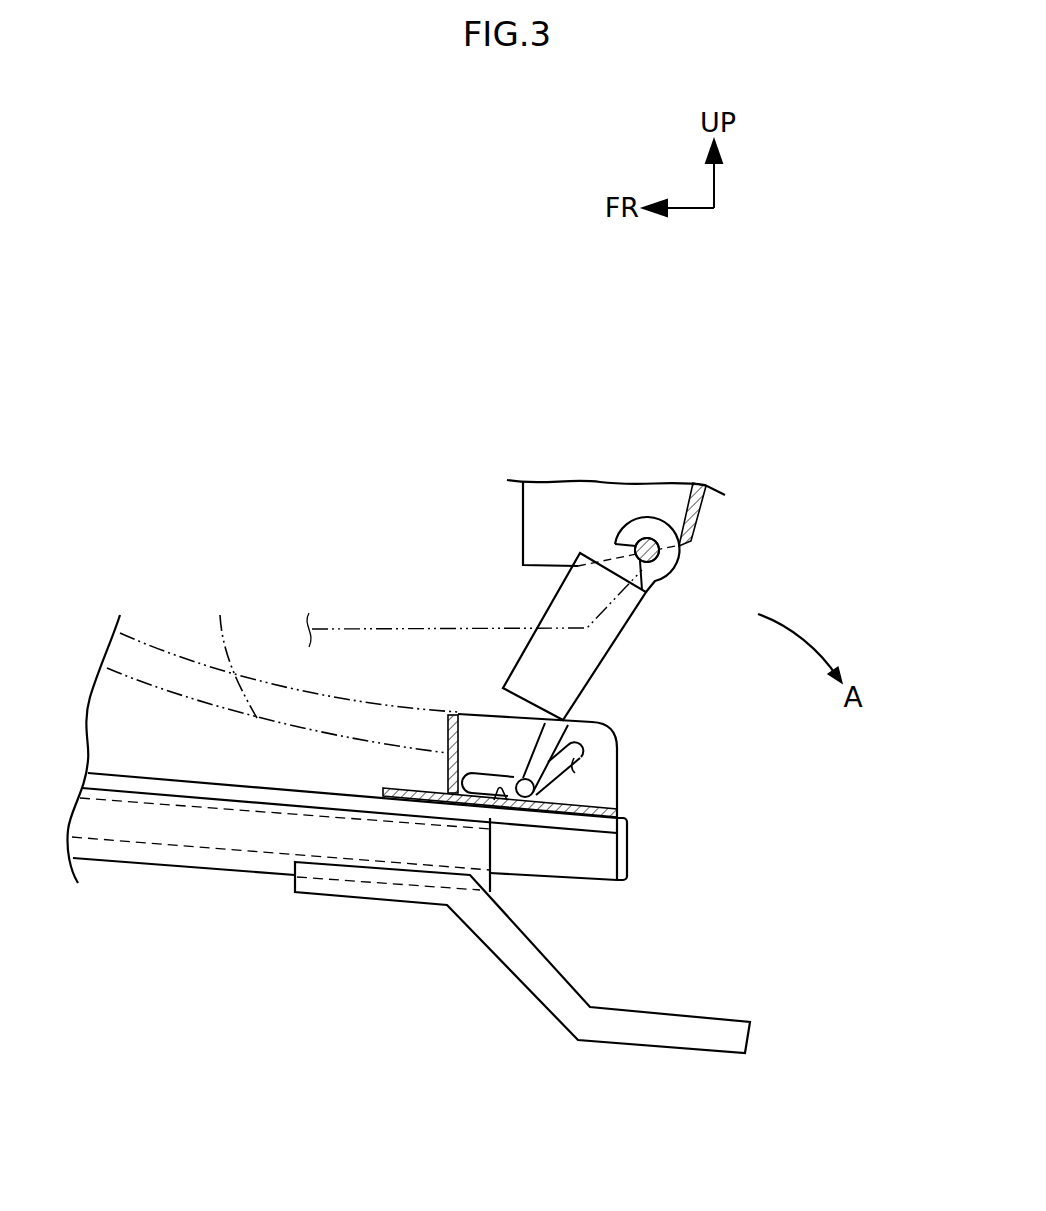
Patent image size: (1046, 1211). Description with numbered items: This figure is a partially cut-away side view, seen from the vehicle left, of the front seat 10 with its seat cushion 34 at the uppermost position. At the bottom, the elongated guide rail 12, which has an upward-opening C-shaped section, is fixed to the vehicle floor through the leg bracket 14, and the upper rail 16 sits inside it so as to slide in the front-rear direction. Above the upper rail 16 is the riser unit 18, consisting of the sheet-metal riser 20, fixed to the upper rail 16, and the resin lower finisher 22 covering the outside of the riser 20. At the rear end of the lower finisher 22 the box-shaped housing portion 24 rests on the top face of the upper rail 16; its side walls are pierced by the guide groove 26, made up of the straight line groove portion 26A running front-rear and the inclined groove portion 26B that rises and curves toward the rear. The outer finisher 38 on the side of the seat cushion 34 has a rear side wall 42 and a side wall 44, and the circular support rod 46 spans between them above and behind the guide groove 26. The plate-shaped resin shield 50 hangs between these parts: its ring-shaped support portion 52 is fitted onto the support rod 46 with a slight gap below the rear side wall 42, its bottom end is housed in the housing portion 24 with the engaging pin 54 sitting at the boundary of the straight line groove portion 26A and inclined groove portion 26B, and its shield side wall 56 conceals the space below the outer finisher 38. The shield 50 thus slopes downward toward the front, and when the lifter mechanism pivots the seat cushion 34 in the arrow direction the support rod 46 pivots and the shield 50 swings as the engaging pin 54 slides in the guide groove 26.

The front seat 10 is at (378, 388).
The guide rail 12 is at (217, 872).
The leg bracket 14 is at (530, 1000).
The upper rail 16 is at (628, 850).
The riser unit 18 is at (424, 727).
The riser 20 is at (282, 664).
The lower finisher 22 is at (605, 720).
The housing portion 24 is at (448, 755).
The guide groove 26 is at (618, 774).
The straight line groove portion 26A is at (512, 806).
The inclined groove portion 26B is at (580, 768).
The seat cushion 34 is at (558, 498).
The outer finisher 38 is at (523, 515).
The rear side wall 42 is at (700, 508).
The side wall 44 is at (543, 538).
The support rod 46 is at (647, 537).
The shield 50 is at (513, 636).
The support portion 52 is at (678, 562).
The engaging pin 54 is at (521, 777).
The shield side wall 56 is at (513, 663).